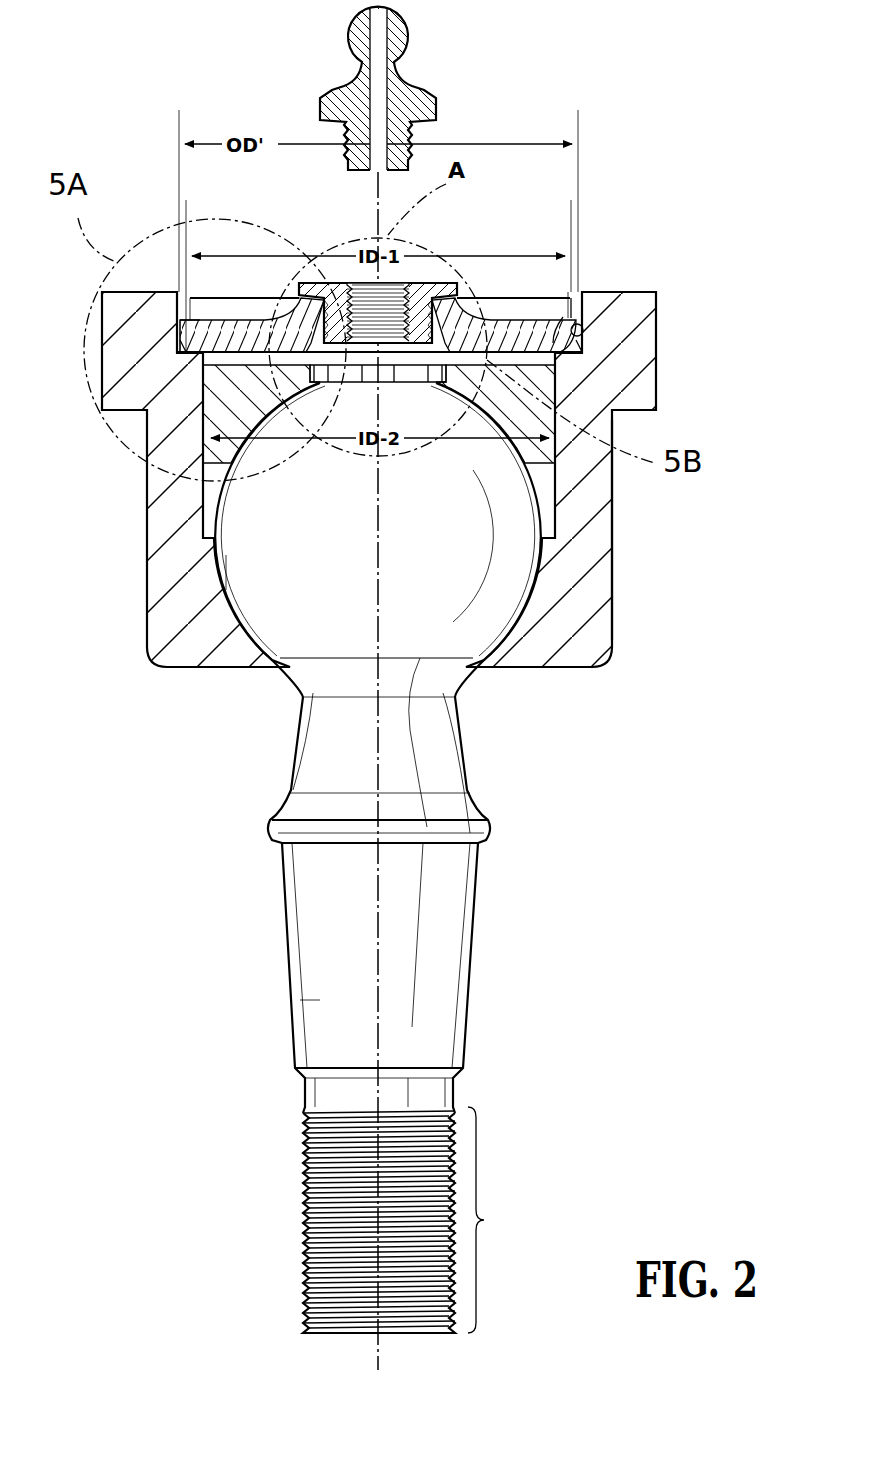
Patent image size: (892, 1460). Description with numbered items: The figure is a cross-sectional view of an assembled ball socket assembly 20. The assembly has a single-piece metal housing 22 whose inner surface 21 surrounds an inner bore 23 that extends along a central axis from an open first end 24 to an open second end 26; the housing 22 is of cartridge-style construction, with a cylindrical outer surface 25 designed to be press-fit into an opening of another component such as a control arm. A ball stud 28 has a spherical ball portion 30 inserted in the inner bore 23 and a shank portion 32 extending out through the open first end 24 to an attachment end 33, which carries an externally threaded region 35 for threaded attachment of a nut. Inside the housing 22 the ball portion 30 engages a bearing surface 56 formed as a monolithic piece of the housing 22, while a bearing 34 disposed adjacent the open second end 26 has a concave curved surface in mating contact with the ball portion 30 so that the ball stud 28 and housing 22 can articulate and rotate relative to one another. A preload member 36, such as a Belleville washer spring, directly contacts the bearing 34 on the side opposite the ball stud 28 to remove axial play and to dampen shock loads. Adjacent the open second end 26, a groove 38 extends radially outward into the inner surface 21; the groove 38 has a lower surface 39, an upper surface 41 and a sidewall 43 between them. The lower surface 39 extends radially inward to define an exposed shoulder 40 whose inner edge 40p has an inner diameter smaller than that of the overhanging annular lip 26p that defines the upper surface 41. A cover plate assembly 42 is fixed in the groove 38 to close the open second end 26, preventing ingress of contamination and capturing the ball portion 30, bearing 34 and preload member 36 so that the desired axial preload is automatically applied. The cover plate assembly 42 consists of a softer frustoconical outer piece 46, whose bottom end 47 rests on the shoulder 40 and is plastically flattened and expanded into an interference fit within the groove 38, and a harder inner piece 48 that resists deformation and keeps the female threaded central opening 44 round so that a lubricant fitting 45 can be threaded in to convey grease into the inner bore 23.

The ball socket assembly 20 is at (742, 864).
The inner surface 21 is at (438, 560).
The housing 22 is at (140, 593).
The inner bore 23 is at (580, 320).
The open first end 24 is at (218, 672).
The outer surface 25 is at (614, 577).
The open second end 26 is at (382, 308).
The annular lip 26p is at (203, 307).
The ball stud 28 is at (486, 918).
The ball portion 30 is at (495, 623).
The shank portion 32 is at (318, 985).
The attachment end 33 is at (288, 1328).
The bearing 34 is at (213, 392).
The externally threaded region 35 is at (496, 1220).
The preload member 36 is at (203, 372).
The groove 38 is at (180, 337).
The lower surface 39 is at (585, 350).
The shoulder 40 is at (177, 323).
The inner edge 40p is at (585, 382).
The upper surface 41 is at (578, 327).
The cover plate assembly 42 is at (229, 312).
The sidewall 43 is at (175, 334).
The central opening 44 is at (405, 283).
The lubricant fitting 45 is at (404, 78).
The outer piece 46 is at (585, 343).
The bottom end 47 is at (562, 340).
The inner piece 48 is at (460, 278).
The bearing surface 56 is at (221, 573).